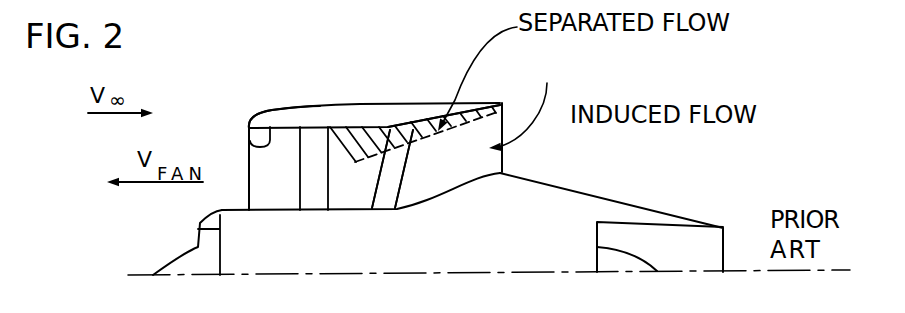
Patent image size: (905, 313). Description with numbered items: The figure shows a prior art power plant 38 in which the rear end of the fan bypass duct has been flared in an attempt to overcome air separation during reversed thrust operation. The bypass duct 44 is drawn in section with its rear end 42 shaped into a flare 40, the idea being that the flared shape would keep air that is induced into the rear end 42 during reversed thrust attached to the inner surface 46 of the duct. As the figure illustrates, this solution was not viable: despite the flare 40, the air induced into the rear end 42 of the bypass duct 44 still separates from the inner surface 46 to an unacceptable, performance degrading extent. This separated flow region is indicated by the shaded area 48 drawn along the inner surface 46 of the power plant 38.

The power plant 38 is at (331, 84).
The flare 40 is at (490, 105).
The rear end 42 is at (505, 172).
The bypass duct 44 is at (300, 104).
The inner surface 46 is at (249, 139).
The shaded area 48 is at (447, 138).